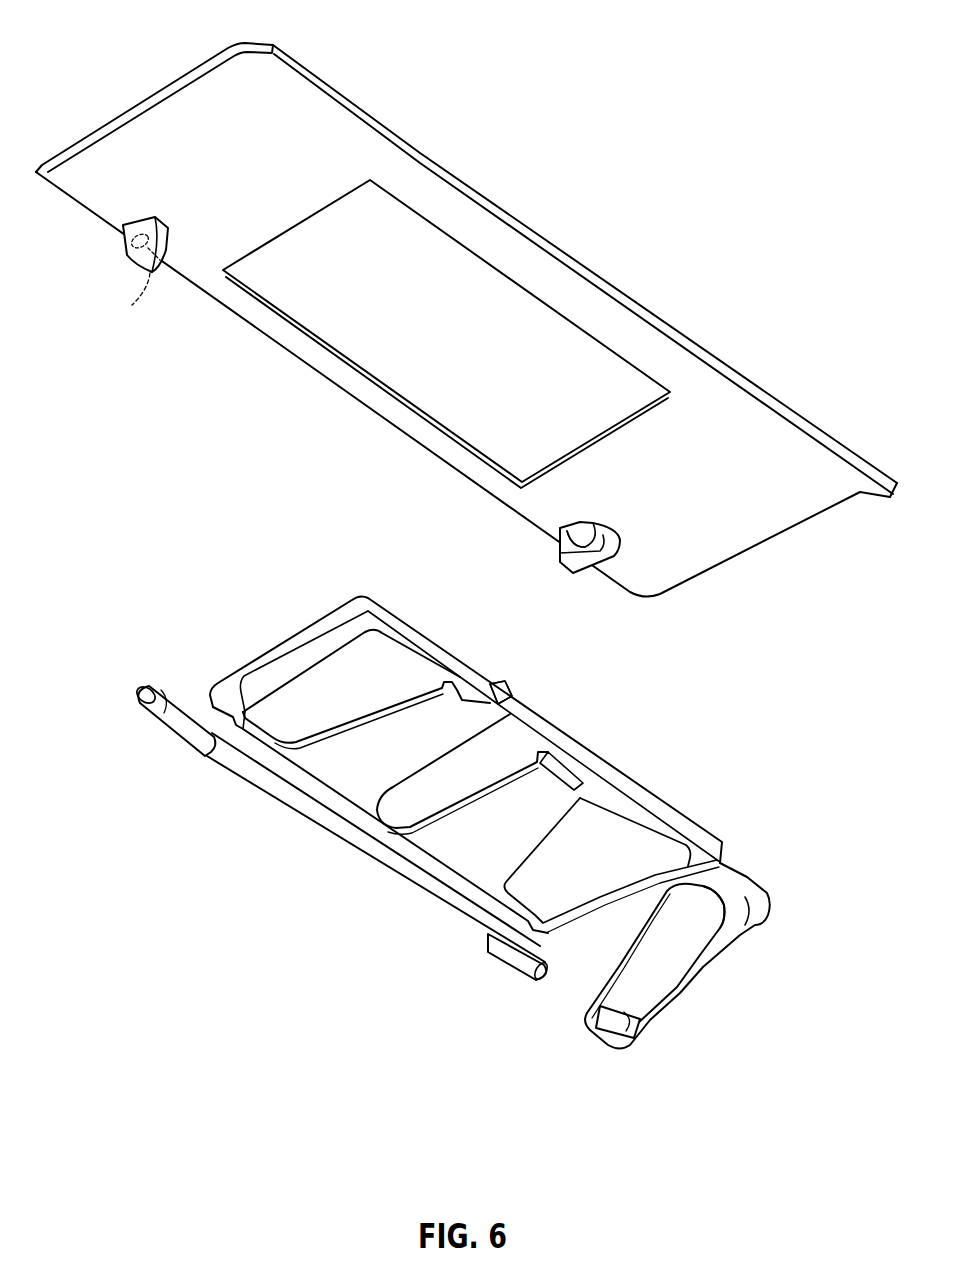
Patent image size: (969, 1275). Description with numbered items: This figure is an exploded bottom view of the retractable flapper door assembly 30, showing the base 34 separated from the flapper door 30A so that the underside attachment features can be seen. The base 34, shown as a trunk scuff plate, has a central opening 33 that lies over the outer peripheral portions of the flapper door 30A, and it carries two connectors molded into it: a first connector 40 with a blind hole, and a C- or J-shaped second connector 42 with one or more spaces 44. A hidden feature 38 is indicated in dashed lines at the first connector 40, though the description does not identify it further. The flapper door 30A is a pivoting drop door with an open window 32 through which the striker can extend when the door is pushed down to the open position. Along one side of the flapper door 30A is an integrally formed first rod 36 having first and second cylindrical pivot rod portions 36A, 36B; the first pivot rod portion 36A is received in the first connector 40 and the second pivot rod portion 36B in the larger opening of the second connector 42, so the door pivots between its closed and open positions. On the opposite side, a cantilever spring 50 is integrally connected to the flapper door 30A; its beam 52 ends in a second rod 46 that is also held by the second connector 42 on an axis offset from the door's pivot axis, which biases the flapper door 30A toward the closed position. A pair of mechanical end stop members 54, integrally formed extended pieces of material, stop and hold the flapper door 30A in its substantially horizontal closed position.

The retractable flapper door assembly 30 is at (265, 797).
The retractable flapper door 30A is at (400, 722).
The open window 32 is at (450, 783).
The central opening 33 is at (398, 330).
The base 34 is at (212, 102).
The first rod 36 is at (367, 837).
The first cylindrical pivot rod portion 36A is at (150, 703).
The second cylindrical pivot rod portion 36B is at (573, 1000).
The detent recess 38 is at (132, 305).
The first connector 40 is at (123, 238).
The second connector 42 is at (607, 553).
The spaces 44 is at (552, 531).
The second rod 46 is at (600, 1037).
The cantilever spring 50 is at (707, 973).
The beam 52 is at (657, 990).
The mechanical end stop members 54 is at (480, 715).